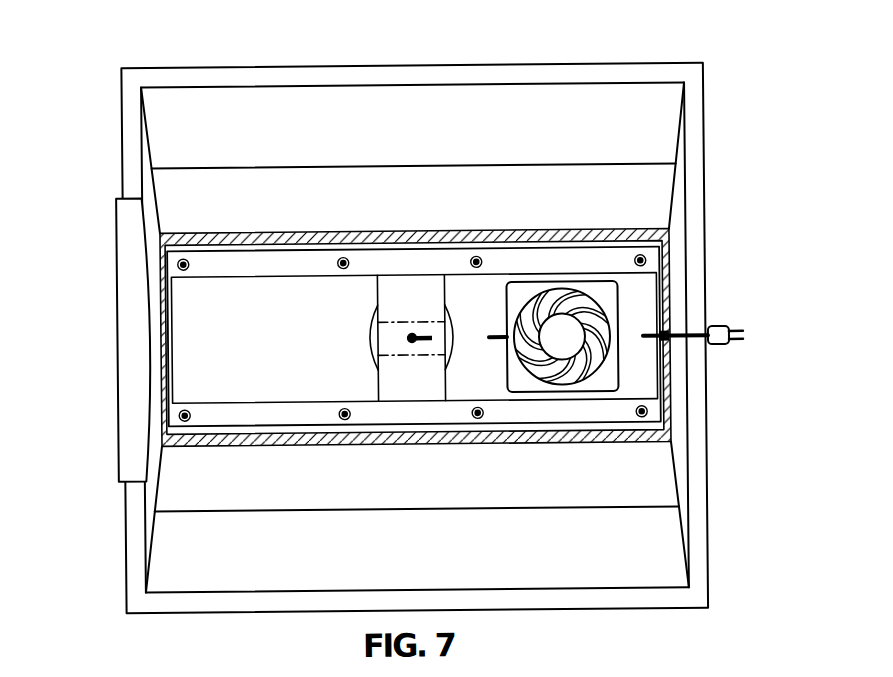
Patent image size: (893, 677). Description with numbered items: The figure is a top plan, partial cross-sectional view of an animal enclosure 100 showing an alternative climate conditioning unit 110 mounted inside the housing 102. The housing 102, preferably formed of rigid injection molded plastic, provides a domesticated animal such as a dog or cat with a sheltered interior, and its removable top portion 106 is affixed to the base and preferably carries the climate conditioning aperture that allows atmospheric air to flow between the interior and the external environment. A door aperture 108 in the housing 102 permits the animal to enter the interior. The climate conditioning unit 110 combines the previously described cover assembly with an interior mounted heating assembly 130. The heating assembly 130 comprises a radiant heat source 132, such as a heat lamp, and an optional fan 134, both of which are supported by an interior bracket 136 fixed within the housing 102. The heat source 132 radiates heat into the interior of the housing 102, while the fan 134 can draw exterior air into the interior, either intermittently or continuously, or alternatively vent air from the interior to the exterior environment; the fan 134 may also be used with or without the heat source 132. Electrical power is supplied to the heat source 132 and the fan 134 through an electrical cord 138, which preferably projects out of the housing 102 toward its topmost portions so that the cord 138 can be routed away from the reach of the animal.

The portable device assembly 100 is at (135, 33).
The housing 102 is at (504, 61).
The top portion 106 is at (639, 125).
The door aperture 108 is at (104, 325).
The climate conditioning unit 110 is at (246, 254).
The heating assembly 130 is at (407, 284).
The radiant heat source 132 is at (367, 337).
The fan 134 is at (560, 279).
The interior bracket 136 is at (279, 415).
The electrical cord 138 is at (700, 321).